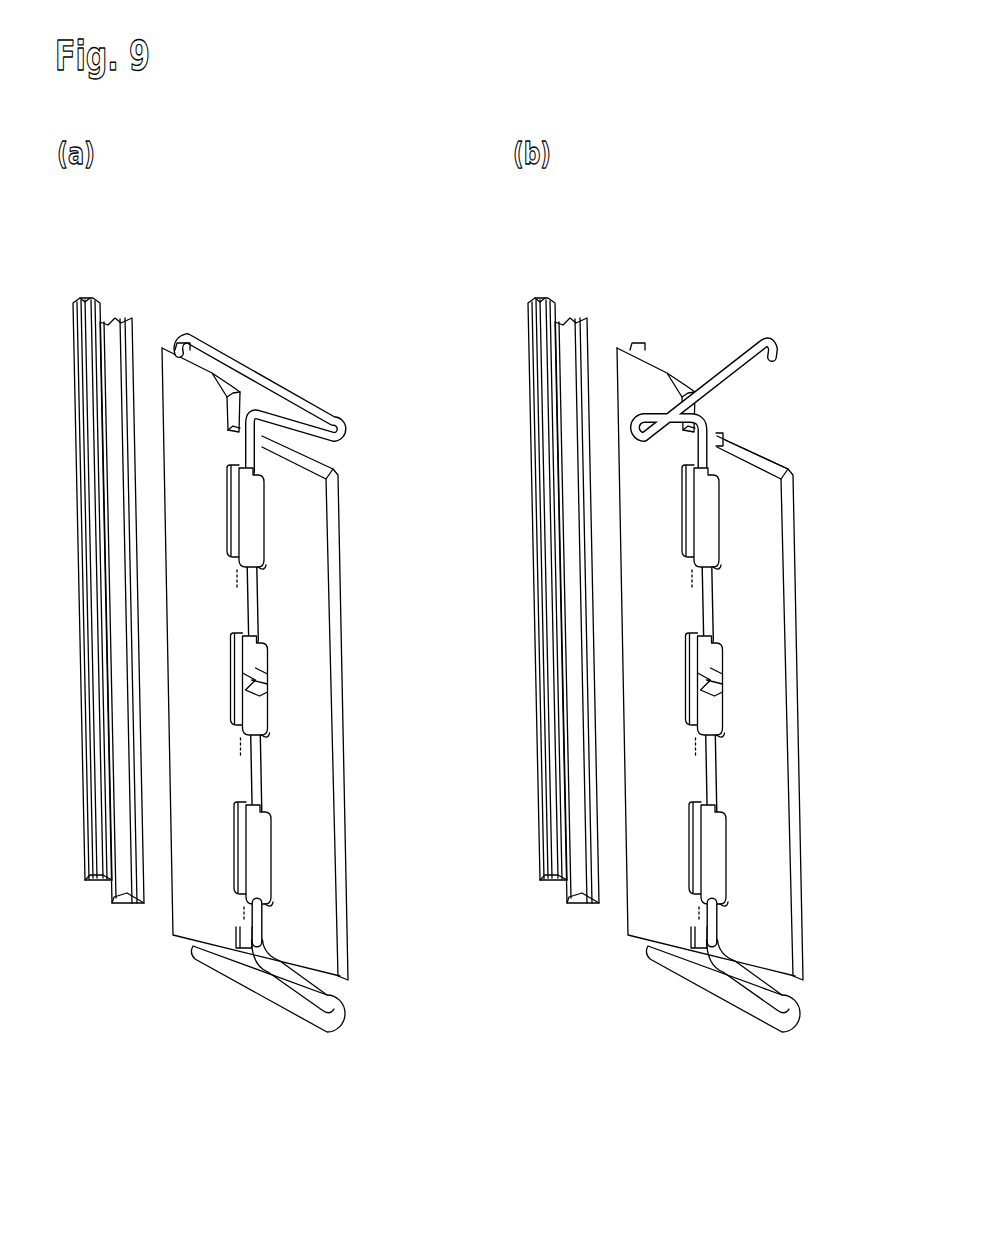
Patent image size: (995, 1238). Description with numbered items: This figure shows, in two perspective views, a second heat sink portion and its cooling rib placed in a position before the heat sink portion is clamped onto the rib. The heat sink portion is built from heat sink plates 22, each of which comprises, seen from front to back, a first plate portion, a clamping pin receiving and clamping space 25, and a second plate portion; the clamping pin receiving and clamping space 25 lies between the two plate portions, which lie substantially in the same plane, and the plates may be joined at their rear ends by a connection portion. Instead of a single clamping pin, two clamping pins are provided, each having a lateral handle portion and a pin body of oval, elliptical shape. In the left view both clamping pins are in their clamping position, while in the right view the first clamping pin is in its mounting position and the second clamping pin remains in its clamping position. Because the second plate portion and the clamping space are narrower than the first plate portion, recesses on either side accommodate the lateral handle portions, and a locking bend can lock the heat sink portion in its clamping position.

The heat sink plate 22 is at (787, 436).
The clamping pin receiving and clamping space 25 is at (758, 408).